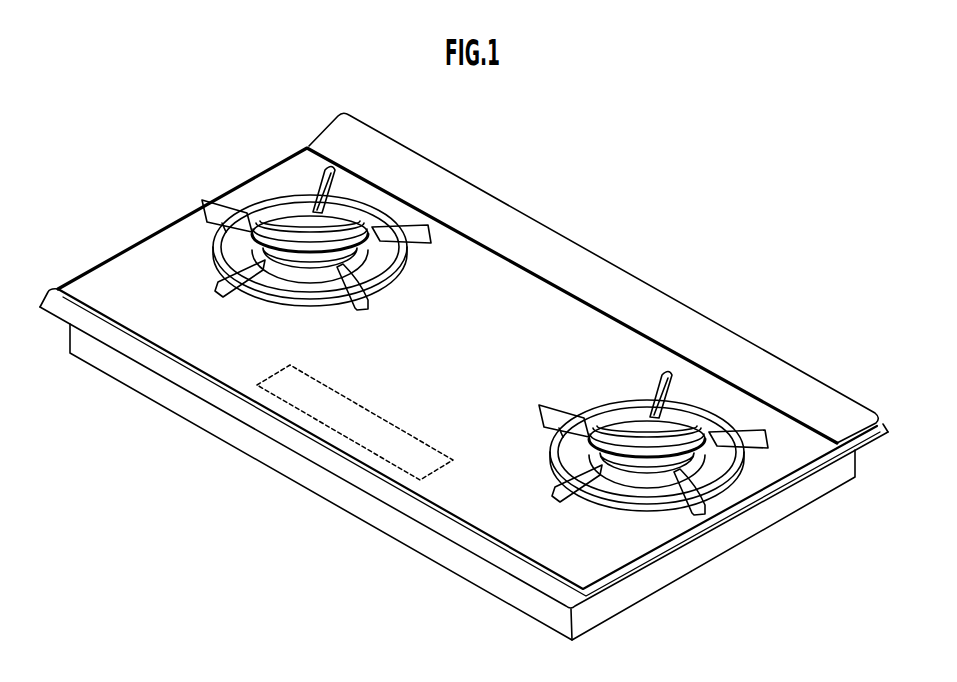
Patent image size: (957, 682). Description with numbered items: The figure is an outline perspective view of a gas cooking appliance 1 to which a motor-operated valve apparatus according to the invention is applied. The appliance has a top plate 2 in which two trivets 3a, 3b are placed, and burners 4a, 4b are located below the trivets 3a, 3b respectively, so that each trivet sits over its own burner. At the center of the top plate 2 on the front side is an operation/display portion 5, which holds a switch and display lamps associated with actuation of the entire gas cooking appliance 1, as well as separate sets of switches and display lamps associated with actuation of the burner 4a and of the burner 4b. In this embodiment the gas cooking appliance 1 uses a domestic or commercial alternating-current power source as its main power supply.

The gas cooking appliance 1 is at (455, 555).
The top plate 2 is at (540, 287).
The trivet 3a is at (236, 196).
The trivet 3b is at (658, 362).
The burner 4a is at (298, 236).
The burner 4b is at (690, 446).
The operation/display portion 5 is at (274, 378).